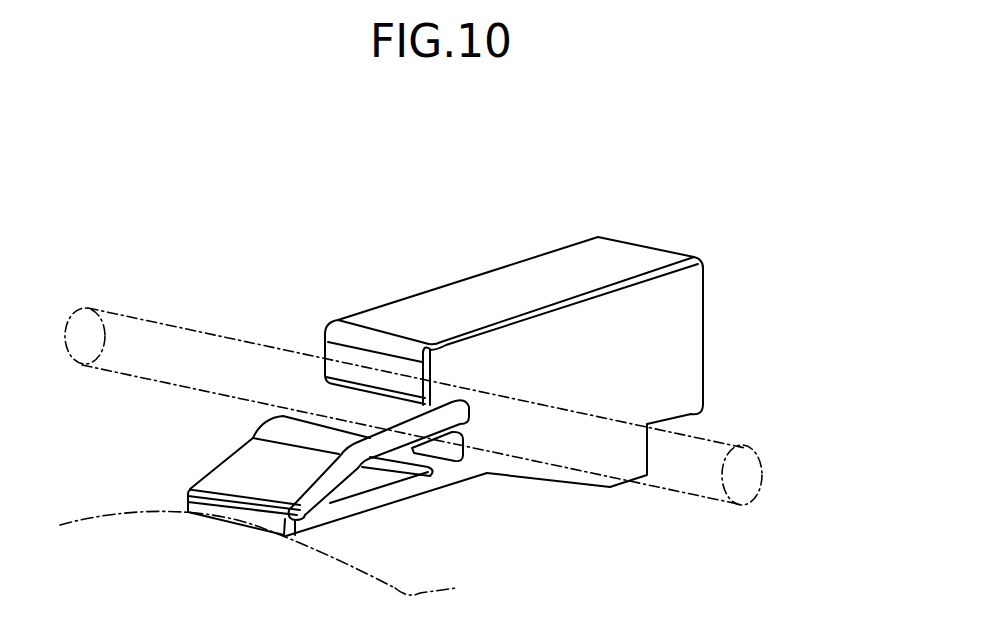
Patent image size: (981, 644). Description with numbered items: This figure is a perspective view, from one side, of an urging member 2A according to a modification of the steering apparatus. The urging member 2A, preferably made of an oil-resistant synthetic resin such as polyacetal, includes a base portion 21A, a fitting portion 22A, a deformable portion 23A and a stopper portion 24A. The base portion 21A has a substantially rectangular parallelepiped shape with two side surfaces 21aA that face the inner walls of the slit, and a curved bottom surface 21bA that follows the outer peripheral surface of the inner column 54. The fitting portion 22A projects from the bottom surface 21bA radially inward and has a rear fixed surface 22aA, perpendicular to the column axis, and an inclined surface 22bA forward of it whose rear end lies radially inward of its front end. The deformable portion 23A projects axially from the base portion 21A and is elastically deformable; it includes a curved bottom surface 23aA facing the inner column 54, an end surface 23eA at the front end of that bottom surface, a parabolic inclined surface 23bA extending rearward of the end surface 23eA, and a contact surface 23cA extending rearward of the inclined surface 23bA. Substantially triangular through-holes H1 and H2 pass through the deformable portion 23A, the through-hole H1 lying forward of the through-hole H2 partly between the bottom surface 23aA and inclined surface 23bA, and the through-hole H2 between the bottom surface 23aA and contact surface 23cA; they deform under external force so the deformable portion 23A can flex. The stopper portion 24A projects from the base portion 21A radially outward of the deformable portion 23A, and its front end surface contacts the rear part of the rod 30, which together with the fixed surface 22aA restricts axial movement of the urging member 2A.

The urging member 2A is at (609, 186).
The base portion 21A is at (776, 321).
The side surface 21aA is at (628, 354).
The bottom surface 21bA is at (700, 414).
The fitting portion 22A is at (591, 465).
The fixed surface 22aA is at (654, 442).
The inclined surface 22bA is at (524, 477).
The deformable portion 23A is at (220, 444).
The bottom surface 23aA is at (420, 480).
The inclined surface 23bA is at (272, 473).
The contact surface 23cA is at (378, 422).
The end surface 23eA is at (196, 507).
The stopper portion 24A is at (316, 362).
The rod 30 is at (133, 327).
The inner column 54 is at (276, 555).
The through-hole H1 is at (364, 490).
The through-hole H2 is at (452, 467).